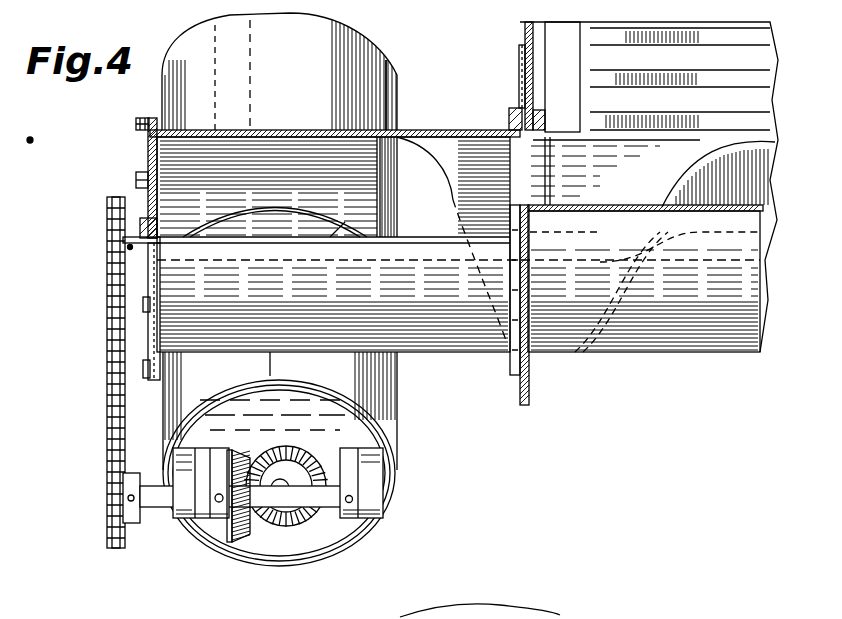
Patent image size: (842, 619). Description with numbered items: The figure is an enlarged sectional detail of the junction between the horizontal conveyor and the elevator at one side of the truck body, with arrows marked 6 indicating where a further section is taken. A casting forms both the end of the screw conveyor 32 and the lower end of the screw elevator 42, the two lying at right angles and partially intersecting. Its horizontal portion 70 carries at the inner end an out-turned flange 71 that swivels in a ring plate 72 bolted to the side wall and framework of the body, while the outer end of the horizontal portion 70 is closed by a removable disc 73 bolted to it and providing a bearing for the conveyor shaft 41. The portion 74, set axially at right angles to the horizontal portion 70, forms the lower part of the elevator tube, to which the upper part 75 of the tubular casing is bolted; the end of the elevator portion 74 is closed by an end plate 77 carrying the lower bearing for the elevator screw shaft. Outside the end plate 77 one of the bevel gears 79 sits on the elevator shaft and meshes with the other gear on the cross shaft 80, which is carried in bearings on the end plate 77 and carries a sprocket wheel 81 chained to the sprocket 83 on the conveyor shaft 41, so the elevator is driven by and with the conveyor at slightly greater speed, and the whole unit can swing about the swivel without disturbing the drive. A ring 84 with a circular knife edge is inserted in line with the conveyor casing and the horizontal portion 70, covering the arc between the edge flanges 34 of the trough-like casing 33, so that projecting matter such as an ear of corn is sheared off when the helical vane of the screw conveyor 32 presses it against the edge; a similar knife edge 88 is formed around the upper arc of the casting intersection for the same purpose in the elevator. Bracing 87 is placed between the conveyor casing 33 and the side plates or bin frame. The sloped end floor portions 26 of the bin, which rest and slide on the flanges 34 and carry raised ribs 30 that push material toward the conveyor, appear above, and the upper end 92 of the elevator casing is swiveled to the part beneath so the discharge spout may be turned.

The section line 6 is at (298, 30).
The end floor portion 26 is at (768, 104).
The raised ribs 30 is at (733, 118).
The screw conveyor 32 is at (758, 192).
The trough-like casing 33 is at (733, 298).
The edge flanges 34 is at (618, 178).
The conveyor shaft 41 is at (340, 233).
The screw elevator 42 is at (350, 40).
The horizontal portion 70 is at (446, 357).
The out-turned flange 71 is at (509, 118).
The ring plate 72 is at (520, 86).
The removable disc 73 is at (150, 283).
The elevator portion 74 is at (398, 421).
The upper part of tubular casing 75 is at (385, 103).
The end plate 77 is at (217, 528).
The bevel gears 79 is at (272, 522).
The cross shaft 80 is at (330, 508).
The sprocket wheel 81 is at (110, 521).
The sprocket 83 is at (132, 226).
The knife ring 84 is at (540, 118).
The bracing 87 is at (540, 372).
The knife edge 88 is at (252, 212).
The upper end of elevator casing 92 is at (182, 88).